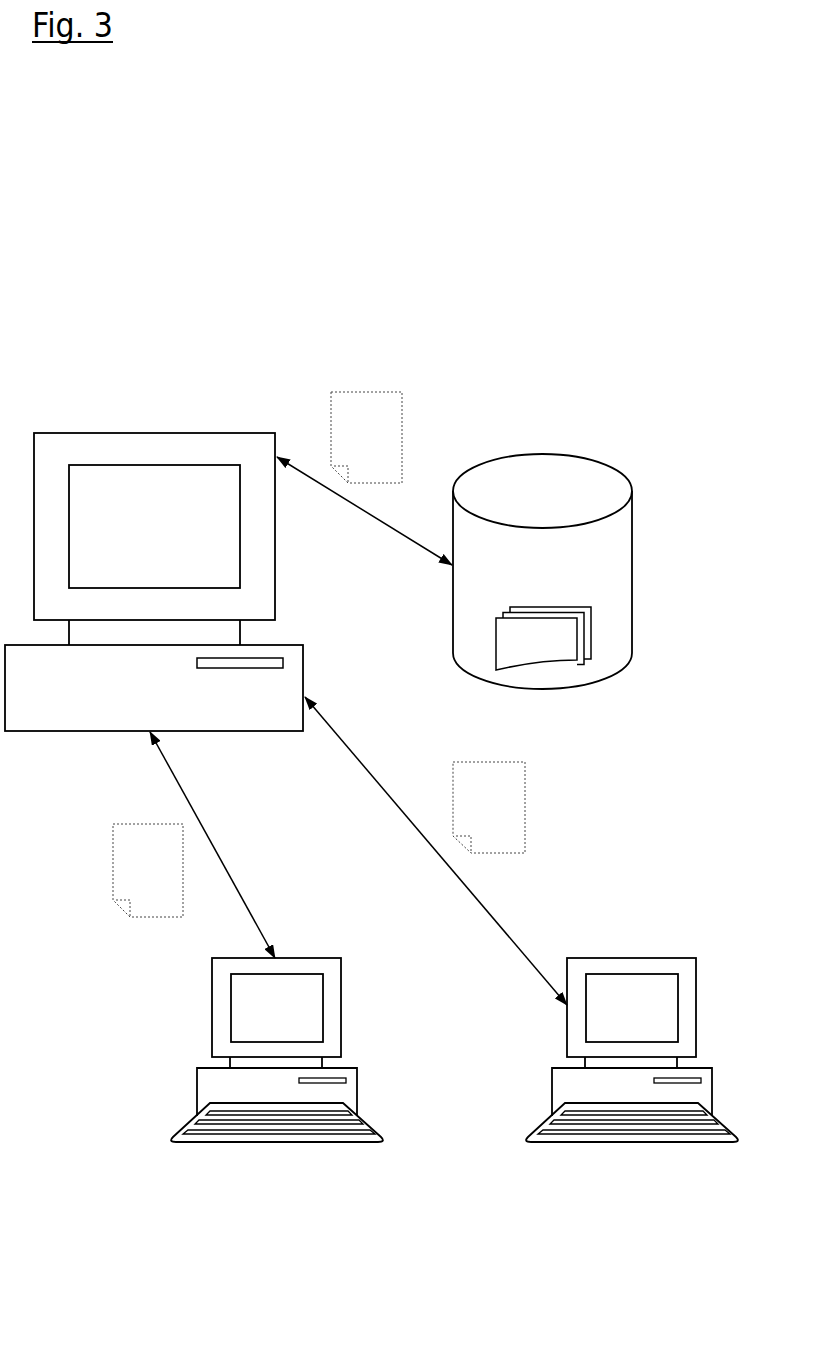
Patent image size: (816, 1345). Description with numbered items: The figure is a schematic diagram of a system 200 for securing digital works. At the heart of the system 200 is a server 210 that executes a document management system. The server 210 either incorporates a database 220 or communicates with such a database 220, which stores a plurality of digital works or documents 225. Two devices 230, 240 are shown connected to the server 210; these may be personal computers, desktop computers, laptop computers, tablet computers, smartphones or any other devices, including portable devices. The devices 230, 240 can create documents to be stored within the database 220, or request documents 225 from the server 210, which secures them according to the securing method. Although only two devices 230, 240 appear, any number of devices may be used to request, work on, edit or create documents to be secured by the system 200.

The system 200 is at (306, 310).
The server 210 is at (165, 536).
The database 220 is at (562, 587).
The documents 225 is at (548, 648).
The device 230 is at (652, 1021).
The device 240 is at (303, 1027).